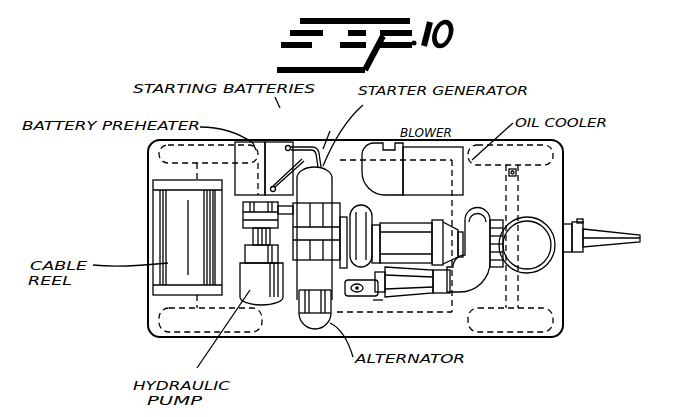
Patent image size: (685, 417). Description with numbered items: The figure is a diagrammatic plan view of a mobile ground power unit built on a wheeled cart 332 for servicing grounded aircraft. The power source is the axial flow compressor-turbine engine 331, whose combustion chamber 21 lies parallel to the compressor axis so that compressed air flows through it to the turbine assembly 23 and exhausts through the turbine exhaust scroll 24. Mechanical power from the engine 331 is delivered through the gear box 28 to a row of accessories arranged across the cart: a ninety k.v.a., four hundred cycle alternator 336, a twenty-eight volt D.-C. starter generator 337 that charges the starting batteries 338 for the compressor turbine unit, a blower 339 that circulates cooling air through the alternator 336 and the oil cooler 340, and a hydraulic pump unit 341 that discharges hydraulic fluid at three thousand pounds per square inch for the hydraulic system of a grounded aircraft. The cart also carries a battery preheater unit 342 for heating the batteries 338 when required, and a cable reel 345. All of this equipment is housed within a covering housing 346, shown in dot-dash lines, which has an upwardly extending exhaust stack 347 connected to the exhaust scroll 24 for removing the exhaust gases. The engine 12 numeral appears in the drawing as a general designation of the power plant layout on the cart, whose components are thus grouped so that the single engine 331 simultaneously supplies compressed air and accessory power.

The engine 12 is at (422, 248).
The combustion chamber 21 is at (412, 282).
The turbine assembly 23 is at (494, 212).
The turbine exhaust scroll 24 is at (570, 283).
The gear box 28 is at (326, 269).
The axial flow compressor-turbine engine 331 is at (516, 205).
The wheeled cart 332 is at (150, 328).
The alternator 336 is at (316, 266).
The starter generator 337 is at (336, 132).
The starting batteries 338 is at (281, 143).
The blower 339 is at (372, 143).
The oil cooler 340 is at (456, 162).
The hydraulic pump unit 341 is at (265, 285).
The battery preheater unit 342 is at (240, 182).
The cable reel 345 is at (165, 237).
The covering housing 346 is at (558, 167).
The exhaust stack 347 is at (550, 218).